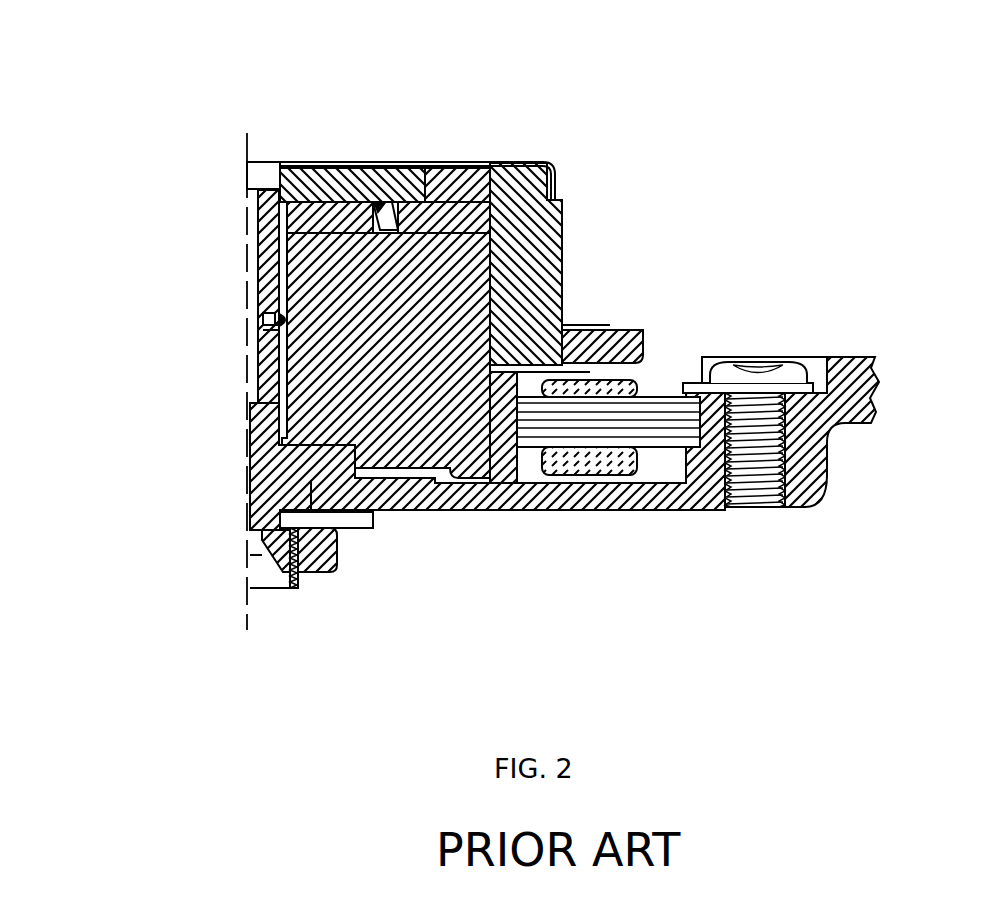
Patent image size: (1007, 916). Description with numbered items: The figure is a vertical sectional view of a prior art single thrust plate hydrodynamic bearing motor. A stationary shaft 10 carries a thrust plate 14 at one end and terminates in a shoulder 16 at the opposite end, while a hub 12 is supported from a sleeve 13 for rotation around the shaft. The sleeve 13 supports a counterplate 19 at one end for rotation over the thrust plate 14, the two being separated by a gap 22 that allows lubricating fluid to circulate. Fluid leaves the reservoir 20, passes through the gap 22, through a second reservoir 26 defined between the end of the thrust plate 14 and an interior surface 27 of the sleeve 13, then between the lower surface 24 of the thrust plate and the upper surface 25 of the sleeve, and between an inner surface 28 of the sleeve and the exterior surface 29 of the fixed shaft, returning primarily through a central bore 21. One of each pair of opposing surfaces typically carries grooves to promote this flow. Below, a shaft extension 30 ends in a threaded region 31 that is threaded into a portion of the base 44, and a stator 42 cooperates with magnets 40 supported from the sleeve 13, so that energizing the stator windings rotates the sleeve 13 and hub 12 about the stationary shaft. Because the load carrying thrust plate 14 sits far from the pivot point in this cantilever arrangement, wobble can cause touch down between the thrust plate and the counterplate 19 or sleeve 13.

The stationary shaft 10 is at (250, 490).
The hub 12 is at (530, 247).
The sleeve 13 is at (443, 190).
The thrust plate 14 is at (333, 210).
The shoulder 16 is at (333, 462).
The counterplate 19 is at (280, 173).
The reservoir 20 is at (246, 243).
The central bore 21 is at (263, 337).
The gap 22 is at (320, 177).
The lower surface of the thrust plate 24 is at (262, 222).
The upper surface of the sleeve 25 is at (263, 308).
The reservoir 26 is at (398, 224).
The interior surface of the sleeve 27 is at (541, 163).
The inner surface of the sleeve 28 is at (300, 287).
The exterior surface of the fixed shaft 29 is at (266, 316).
The shaft extension 30 is at (280, 572).
The threaded region 31 is at (302, 570).
The magnets 40 is at (500, 453).
The stator 42 is at (628, 383).
The base 44 is at (643, 297).